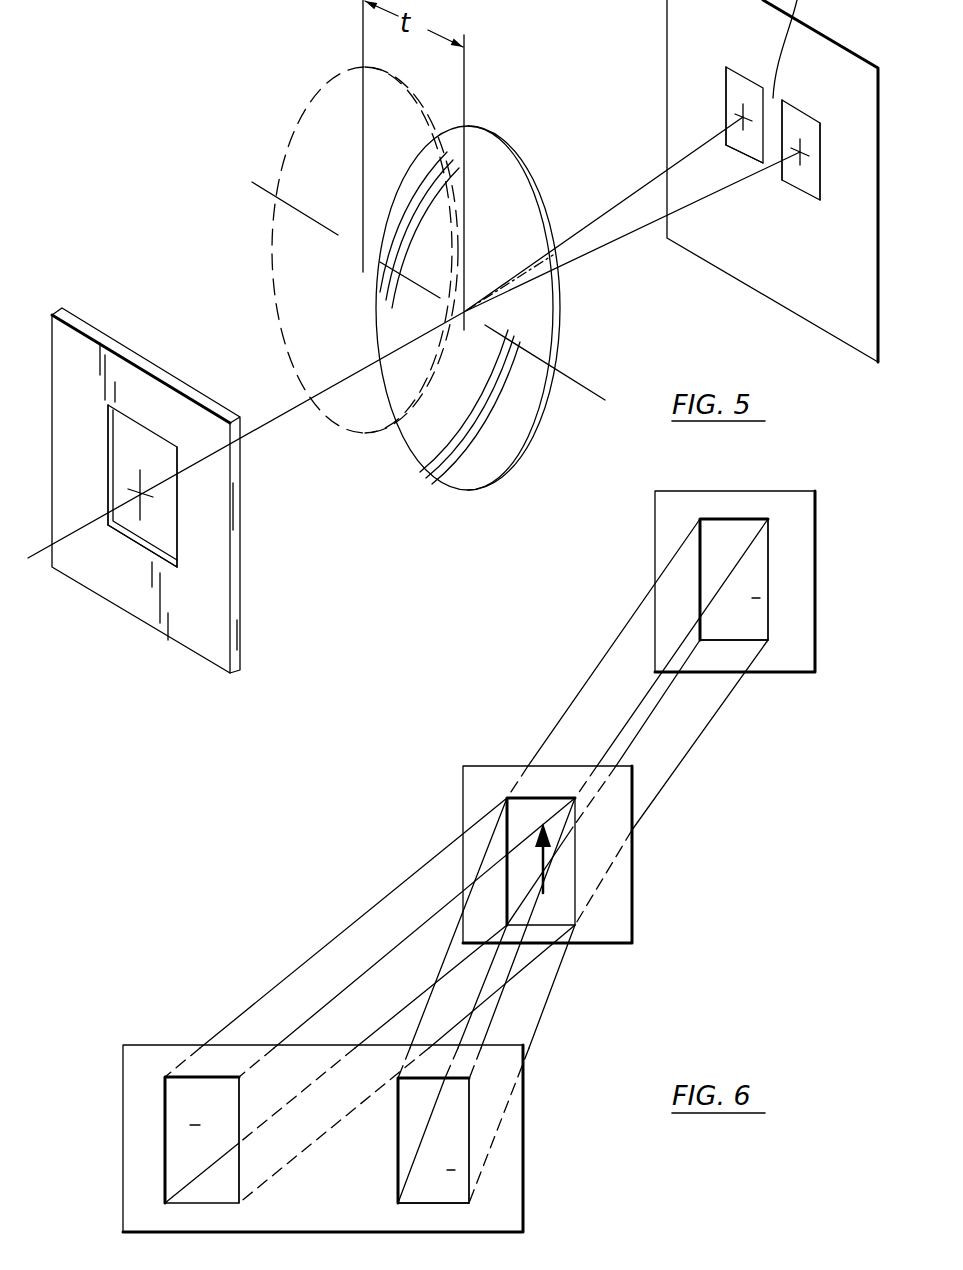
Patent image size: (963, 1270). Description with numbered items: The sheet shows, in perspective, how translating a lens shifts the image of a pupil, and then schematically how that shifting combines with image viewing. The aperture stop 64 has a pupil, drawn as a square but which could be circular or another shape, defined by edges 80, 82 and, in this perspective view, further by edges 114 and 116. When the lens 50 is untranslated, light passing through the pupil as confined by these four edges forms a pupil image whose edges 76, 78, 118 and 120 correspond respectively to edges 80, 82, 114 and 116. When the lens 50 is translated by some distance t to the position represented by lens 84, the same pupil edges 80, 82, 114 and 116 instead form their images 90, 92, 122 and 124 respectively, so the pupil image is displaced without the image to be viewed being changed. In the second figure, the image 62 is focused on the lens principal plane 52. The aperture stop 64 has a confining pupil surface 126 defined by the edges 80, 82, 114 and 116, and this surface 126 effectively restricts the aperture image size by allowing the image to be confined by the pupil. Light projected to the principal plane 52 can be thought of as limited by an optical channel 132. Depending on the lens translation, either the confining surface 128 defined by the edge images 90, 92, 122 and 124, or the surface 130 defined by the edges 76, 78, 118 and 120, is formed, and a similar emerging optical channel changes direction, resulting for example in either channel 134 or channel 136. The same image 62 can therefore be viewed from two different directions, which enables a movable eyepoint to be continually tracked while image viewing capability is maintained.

In FIG. 5, the lens 50 is at (557, 343).
In FIG. 6, the lens principal plane 52 is at (480, 782).
In FIG. 6, the image 62 is at (545, 857).
In FIG. 5, the aperture stop 64 is at (243, 600).
In FIG. 6, the aperture stop 64 is at (800, 648).
In FIG. 5, the pupil image edge 76 is at (800, 108).
In FIG. 6, the pupil image edge 76 is at (207, 1077).
In FIG. 5, the pupil image edge 78 is at (808, 198).
In FIG. 6, the pupil image edge 78 is at (196, 1203).
In FIG. 5, the pupil edge 80 is at (154, 432).
In FIG. 6, the pupil edge 80 is at (712, 518).
In FIG. 5, the pupil edge 82 is at (133, 542).
In FIG. 6, the pupil edge 82 is at (733, 643).
In FIG. 5, the translated lens position 84 is at (290, 145).
In FIG. 5, the pupil edge image 90 is at (745, 72).
In FIG. 6, the pupil edge image 90 is at (468, 1078).
In FIG. 5, the pupil edge image 92 is at (740, 162).
In FIG. 6, the pupil edge image 92 is at (440, 1203).
In FIG. 5, the pupil edge 114 is at (107, 463).
In FIG. 6, the pupil edge 114 is at (768, 563).
In FIG. 5, the pupil edge 116 is at (180, 507).
In FIG. 6, the pupil edge 116 is at (700, 590).
In FIG. 5, the pupil image edge 118 is at (774, 178).
In FIG. 6, the pupil image edge 118 is at (239, 1155).
In FIG. 5, the pupil image edge 120 is at (820, 166).
In FIG. 6, the pupil image edge 120 is at (165, 1098).
In FIG. 5, the pupil edge image 122 is at (726, 103).
In FIG. 6, the pupil edge image 122 is at (468, 1130).
In FIG. 6, the pupil edge image 124 is at (397, 1152).
In FIG. 6, the confining pupil surface 126 is at (752, 598).
In FIG. 6, the confining surface 128 is at (447, 1170).
In FIG. 6, the confining surface 130 is at (195, 1125).
In FIG. 6, the optical channel 132 is at (672, 732).
In FIG. 6, the emerging optical channel 134 is at (527, 1004).
In FIG. 6, the emerging optical channel 136 is at (375, 942).